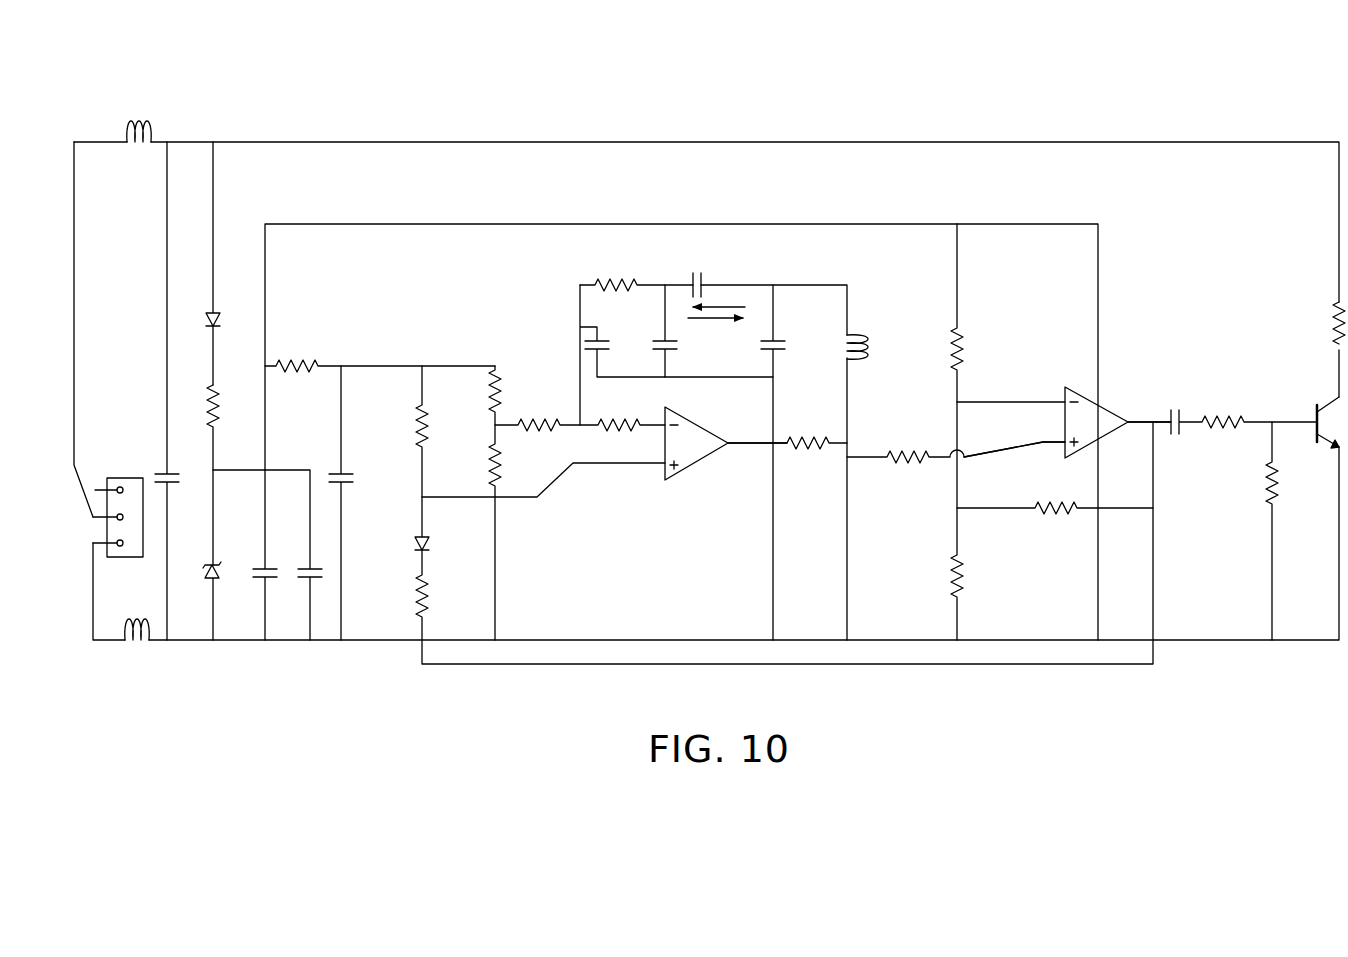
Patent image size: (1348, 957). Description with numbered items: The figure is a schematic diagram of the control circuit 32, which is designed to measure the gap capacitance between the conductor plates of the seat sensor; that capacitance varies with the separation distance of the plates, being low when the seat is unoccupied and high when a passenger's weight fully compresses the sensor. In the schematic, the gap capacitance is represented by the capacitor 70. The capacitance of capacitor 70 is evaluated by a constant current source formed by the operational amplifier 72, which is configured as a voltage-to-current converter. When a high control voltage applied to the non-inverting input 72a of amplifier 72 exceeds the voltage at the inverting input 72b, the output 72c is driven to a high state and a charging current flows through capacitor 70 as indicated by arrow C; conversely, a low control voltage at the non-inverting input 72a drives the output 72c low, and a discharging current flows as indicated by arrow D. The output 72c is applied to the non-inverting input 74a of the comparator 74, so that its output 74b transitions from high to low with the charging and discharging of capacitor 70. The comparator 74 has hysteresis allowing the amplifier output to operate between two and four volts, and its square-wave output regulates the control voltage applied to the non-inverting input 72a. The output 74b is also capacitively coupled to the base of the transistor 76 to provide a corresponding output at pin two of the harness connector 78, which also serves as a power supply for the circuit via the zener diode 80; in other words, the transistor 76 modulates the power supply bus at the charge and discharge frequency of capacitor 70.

The control circuit 32 is at (303, 112).
The capacitor 70 is at (692, 278).
The operational amplifier 72 is at (695, 440).
The non-inverting input of amplifier 72a is at (639, 467).
The inverting input of amplifier 72b is at (646, 432).
The output of amplifier 72c is at (745, 447).
The comparator 74 is at (1100, 416).
The non-inverting input of comparator 74a is at (1033, 442).
The output of comparator 74b is at (1135, 425).
The transistor 76 is at (1313, 402).
The harness connector 78 is at (115, 473).
The zener diode 80 is at (193, 576).